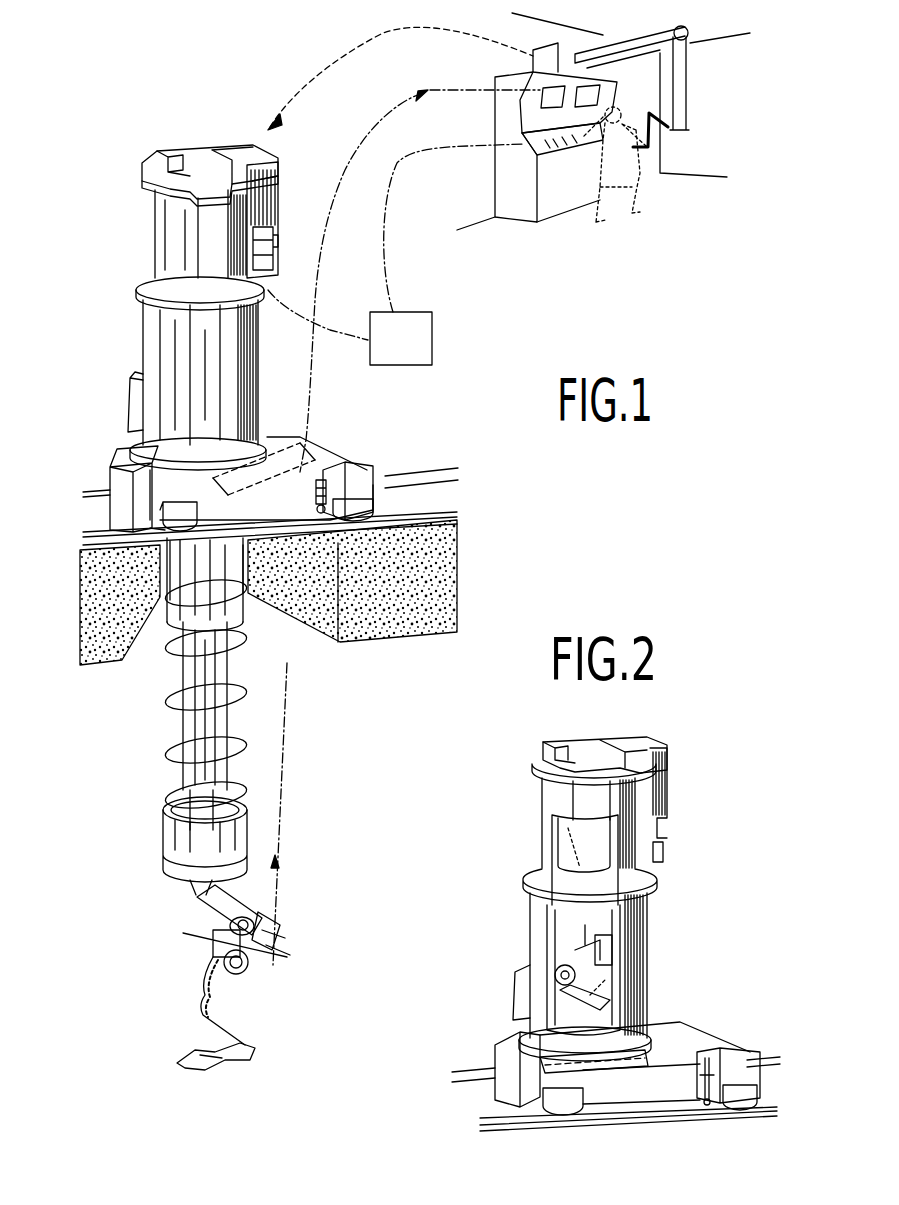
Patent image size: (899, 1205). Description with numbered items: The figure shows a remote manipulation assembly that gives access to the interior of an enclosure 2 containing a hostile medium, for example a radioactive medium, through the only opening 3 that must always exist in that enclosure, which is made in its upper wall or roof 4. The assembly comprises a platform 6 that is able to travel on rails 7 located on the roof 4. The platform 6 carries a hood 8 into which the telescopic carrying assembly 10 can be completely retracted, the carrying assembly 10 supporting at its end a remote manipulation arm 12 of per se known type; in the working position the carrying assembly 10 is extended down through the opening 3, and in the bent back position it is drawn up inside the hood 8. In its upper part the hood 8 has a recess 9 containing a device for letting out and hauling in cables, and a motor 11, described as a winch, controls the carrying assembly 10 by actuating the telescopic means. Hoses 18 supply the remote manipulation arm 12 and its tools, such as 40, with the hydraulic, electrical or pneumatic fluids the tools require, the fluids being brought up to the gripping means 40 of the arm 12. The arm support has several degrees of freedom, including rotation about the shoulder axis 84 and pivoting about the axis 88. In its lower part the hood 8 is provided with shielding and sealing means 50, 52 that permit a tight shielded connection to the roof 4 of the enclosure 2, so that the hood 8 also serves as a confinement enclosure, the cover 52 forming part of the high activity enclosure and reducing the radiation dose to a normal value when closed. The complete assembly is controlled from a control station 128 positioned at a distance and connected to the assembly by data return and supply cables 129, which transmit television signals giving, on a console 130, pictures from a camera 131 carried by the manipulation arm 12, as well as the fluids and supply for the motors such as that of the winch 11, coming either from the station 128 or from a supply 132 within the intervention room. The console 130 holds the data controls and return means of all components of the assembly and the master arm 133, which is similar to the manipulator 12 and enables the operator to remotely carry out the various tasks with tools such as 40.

In FIG. 1, the enclosure 2 is at (109, 707).
In FIG. 1, the opening 3 is at (160, 612).
In FIG. 1, the roof 4 is at (355, 636).
In FIG. 1, the platform 6 is at (318, 432).
In FIG. 1, the rails 7 is at (400, 476).
In FIG. 1, the hood 8 is at (250, 385).
In FIG. 2, the hood 8 is at (530, 933).
In FIG. 1, the recess 9 is at (165, 230).
In FIG. 2, the recess 9 is at (540, 834).
In FIG. 1, the carrying assembly 10 is at (277, 668).
In FIG. 1, the motor 11 is at (262, 232).
In FIG. 1, the remote manipulation arm 12 is at (245, 970).
In FIG. 1, the hoses 18 is at (248, 730).
In FIG. 1, the tools 40 is at (170, 1052).
In FIG. 1, the shielding and sealing means 50 is at (335, 450).
In FIG. 2, the shielding and sealing means 50 is at (643, 1050).
In FIG. 1, the cover 52 is at (333, 472).
In FIG. 1, the shoulder axis 84 is at (205, 903).
In FIG. 1, the pivoting axis 88 is at (210, 947).
In FIG. 1, the control station 128 is at (616, 28).
In FIG. 1, the data return and supply cables 129 is at (363, 144).
In FIG. 1, the console 130 is at (550, 200).
In FIG. 1, the camera 131 is at (303, 927).
In FIG. 1, the supply 132 is at (395, 254).
In FIG. 1, the master arm 133 is at (684, 112).